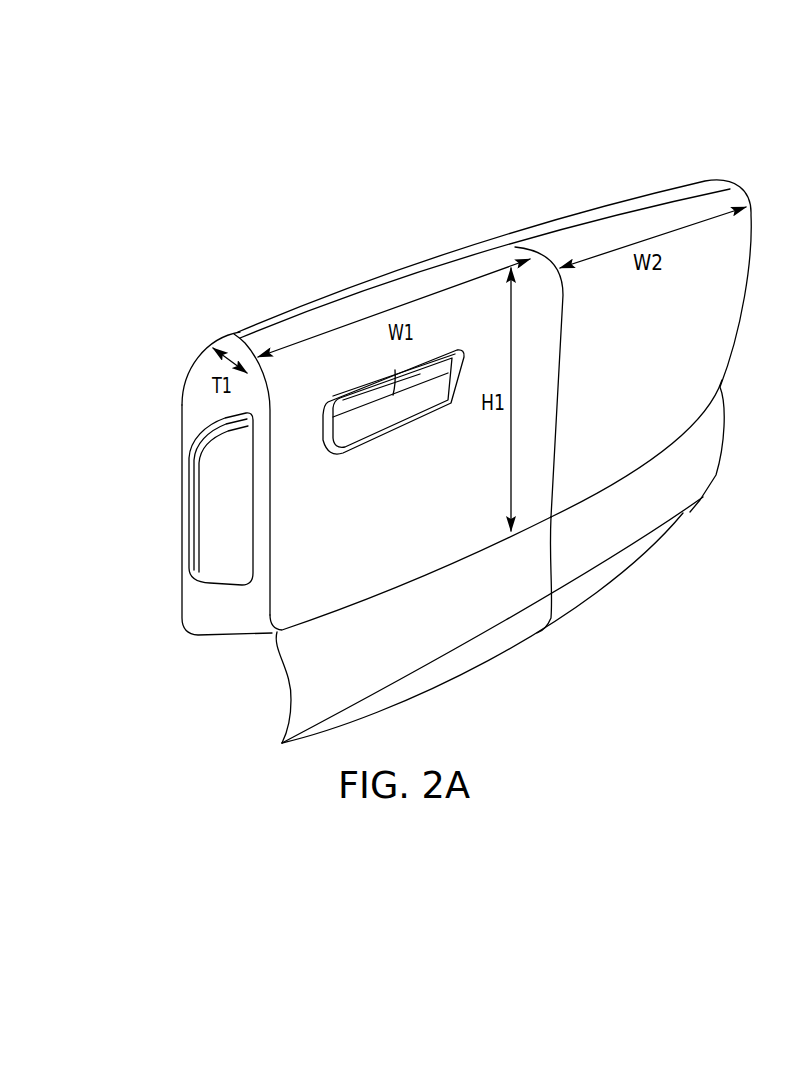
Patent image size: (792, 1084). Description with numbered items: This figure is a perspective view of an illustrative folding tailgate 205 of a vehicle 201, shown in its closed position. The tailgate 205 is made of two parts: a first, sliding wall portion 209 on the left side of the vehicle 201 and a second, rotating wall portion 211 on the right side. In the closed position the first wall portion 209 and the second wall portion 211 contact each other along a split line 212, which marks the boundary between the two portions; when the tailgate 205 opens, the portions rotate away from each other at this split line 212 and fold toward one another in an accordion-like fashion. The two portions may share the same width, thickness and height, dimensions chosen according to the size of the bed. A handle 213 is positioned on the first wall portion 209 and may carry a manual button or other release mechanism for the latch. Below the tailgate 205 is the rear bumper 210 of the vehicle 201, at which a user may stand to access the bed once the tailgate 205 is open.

The vehicle 201 is at (522, 150).
The folding tailgate 205 is at (410, 268).
The first wall portion 209 is at (262, 316).
The rear bumper 210 is at (432, 635).
The second wall portion 211 is at (593, 228).
The split line 212 is at (560, 406).
The handle 213 is at (313, 414).